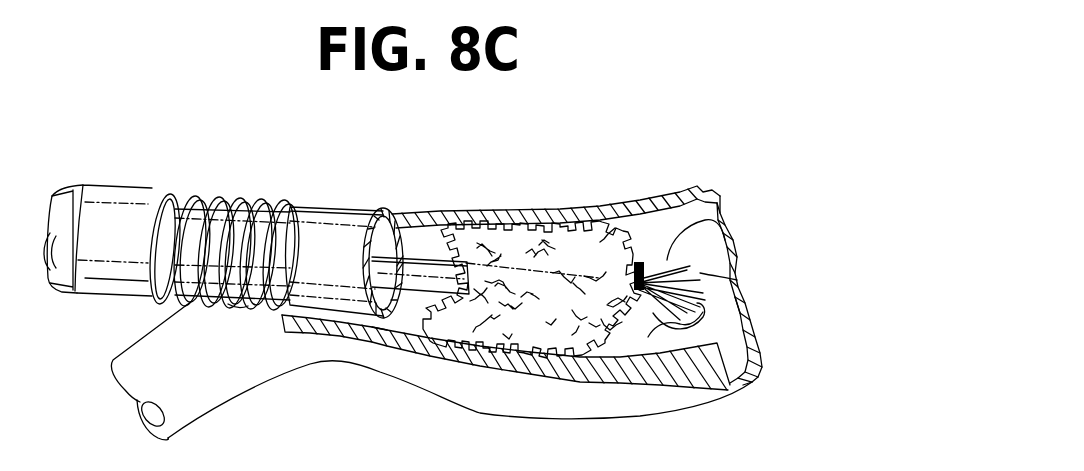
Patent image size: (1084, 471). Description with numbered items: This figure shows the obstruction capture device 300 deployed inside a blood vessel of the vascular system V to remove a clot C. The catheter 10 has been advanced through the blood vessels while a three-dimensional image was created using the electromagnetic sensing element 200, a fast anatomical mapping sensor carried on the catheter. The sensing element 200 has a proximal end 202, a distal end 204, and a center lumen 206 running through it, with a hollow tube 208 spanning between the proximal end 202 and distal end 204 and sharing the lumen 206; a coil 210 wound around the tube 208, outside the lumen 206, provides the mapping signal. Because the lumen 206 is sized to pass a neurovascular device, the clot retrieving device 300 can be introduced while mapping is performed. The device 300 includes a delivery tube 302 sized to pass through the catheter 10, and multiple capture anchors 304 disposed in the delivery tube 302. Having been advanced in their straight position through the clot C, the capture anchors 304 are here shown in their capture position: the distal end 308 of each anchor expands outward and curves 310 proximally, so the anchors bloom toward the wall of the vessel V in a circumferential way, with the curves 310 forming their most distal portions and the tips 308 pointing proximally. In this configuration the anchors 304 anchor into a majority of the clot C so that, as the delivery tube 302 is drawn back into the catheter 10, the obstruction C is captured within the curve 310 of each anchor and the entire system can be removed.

The catheter 10 is at (114, 230).
The electromagnetic sensing element 200 is at (323, 206).
The proximal end 202 is at (60, 282).
The distal end 204 is at (380, 332).
The center lumen 206 is at (387, 220).
The hollow tube 208 is at (236, 309).
The coil 210 is at (212, 198).
The device 300 is at (641, 255).
The delivery tube 302 is at (423, 270).
The capture anchors 304 is at (653, 313).
The distal end 308 is at (673, 257).
The curve 310 is at (736, 281).
The clot C is at (550, 247).
The vascular system V is at (478, 387).